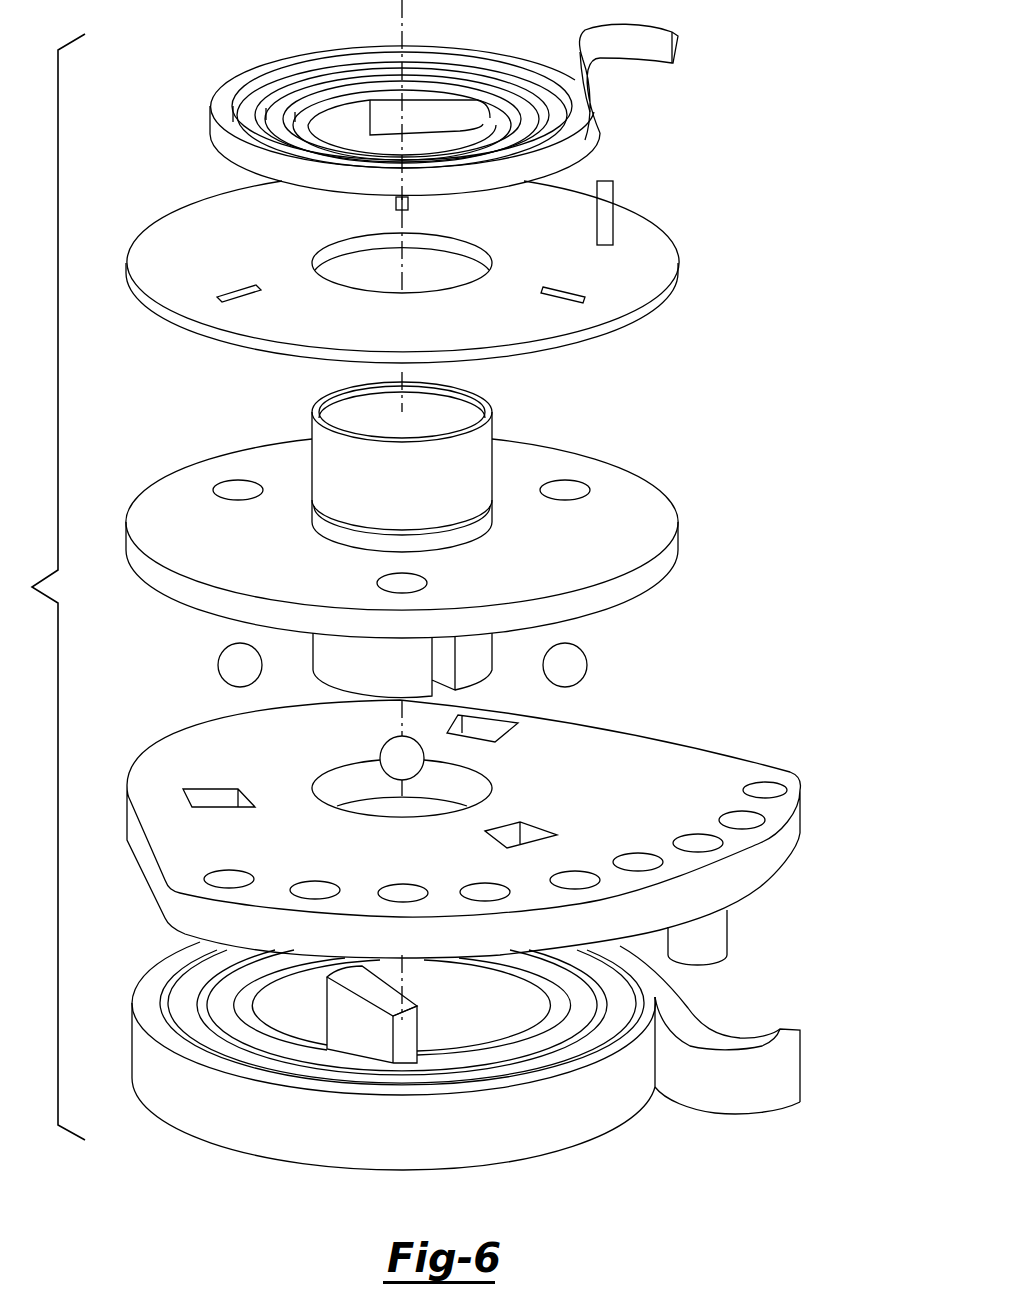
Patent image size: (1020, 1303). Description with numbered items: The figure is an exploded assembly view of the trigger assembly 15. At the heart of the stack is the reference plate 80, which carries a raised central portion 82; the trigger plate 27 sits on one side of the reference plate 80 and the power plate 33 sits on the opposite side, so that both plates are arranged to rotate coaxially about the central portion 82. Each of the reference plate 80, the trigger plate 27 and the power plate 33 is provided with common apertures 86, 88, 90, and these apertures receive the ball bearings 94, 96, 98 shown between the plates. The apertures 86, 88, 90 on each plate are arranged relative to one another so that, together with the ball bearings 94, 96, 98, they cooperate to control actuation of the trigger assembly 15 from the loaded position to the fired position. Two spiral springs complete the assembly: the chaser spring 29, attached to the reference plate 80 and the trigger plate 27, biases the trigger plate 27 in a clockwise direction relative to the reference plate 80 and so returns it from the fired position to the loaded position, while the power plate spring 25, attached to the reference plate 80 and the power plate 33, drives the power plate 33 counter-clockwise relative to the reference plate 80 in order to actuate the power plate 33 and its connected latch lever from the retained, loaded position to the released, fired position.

The trigger assembly 15 is at (776, 127).
The power plate spring 25 is at (790, 1075).
The trigger plate 27 is at (665, 250).
The chaser spring 29 is at (680, 50).
The power plate 33 is at (720, 765).
The reference plate 80 is at (655, 520).
The central portion 82 is at (518, 424).
The aperture 86 is at (408, 200).
The aperture 88 is at (578, 297).
The aperture 90 is at (220, 296).
The ball bearing 94 is at (579, 670).
The ball bearing 96 is at (385, 755).
The ball bearing 98 is at (228, 664).